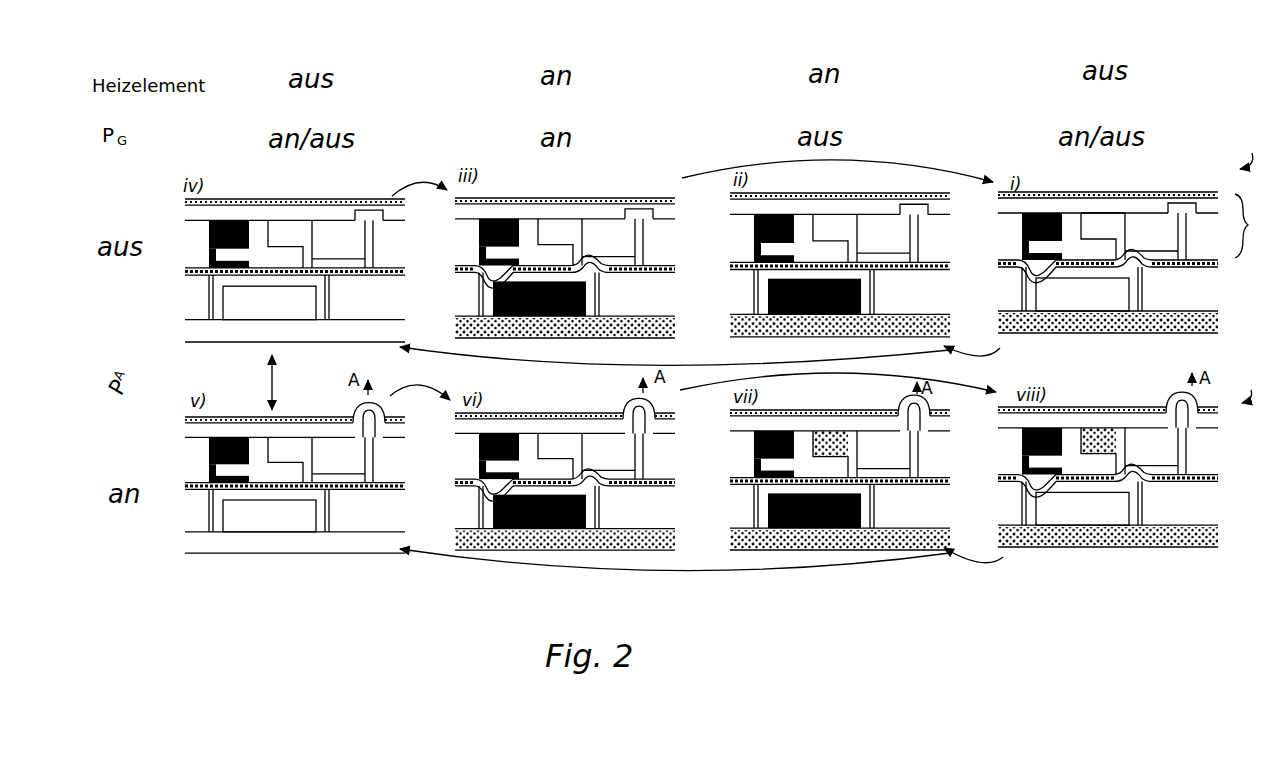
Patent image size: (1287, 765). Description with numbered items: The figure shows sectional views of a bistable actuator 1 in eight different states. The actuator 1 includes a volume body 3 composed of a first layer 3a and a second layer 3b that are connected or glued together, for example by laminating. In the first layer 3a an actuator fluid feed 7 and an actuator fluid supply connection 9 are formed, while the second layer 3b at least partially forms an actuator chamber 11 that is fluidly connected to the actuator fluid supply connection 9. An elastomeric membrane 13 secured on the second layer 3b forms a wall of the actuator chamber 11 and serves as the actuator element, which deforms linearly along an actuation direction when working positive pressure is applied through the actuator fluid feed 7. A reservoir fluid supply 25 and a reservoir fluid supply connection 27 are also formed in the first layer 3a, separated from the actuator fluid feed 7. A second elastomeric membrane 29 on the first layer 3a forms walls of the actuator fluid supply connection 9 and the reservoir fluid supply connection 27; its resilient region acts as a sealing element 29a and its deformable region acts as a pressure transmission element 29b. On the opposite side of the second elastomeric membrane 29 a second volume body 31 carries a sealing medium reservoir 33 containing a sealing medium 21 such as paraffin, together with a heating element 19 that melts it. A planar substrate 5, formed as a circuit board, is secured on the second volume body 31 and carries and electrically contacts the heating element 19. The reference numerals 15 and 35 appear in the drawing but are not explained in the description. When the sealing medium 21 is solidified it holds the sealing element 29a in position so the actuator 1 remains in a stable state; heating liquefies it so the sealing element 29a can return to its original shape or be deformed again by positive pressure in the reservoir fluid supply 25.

The bistable actuator 1 is at (1250, 268).
The volume body 3 is at (1248, 226).
The first layer 3a is at (1212, 246).
The second layer 3b is at (1148, 173).
The planar substrate 5 is at (1234, 532).
The actuator fluid feed 7 is at (284, 232).
The actuator fluid supply connection 9 is at (350, 262).
The actuator chamber 11 is at (361, 212).
The elastomeric membrane 13 is at (396, 208).
The reservoir 15 is at (1114, 232).
The heating element 19 is at (1082, 303).
The sealing medium 21 is at (216, 288).
The reservoir fluid supply 25 is at (232, 225).
The reservoir fluid supply connection 27 is at (248, 266).
The second elastomeric membrane 29 is at (397, 275).
The sealing element 29a is at (607, 283).
The pressure transmission element 29b is at (490, 280).
The second volume body 31 is at (1218, 510).
The sealing medium reservoir 33 is at (322, 307).
The opening 35 is at (405, 210).